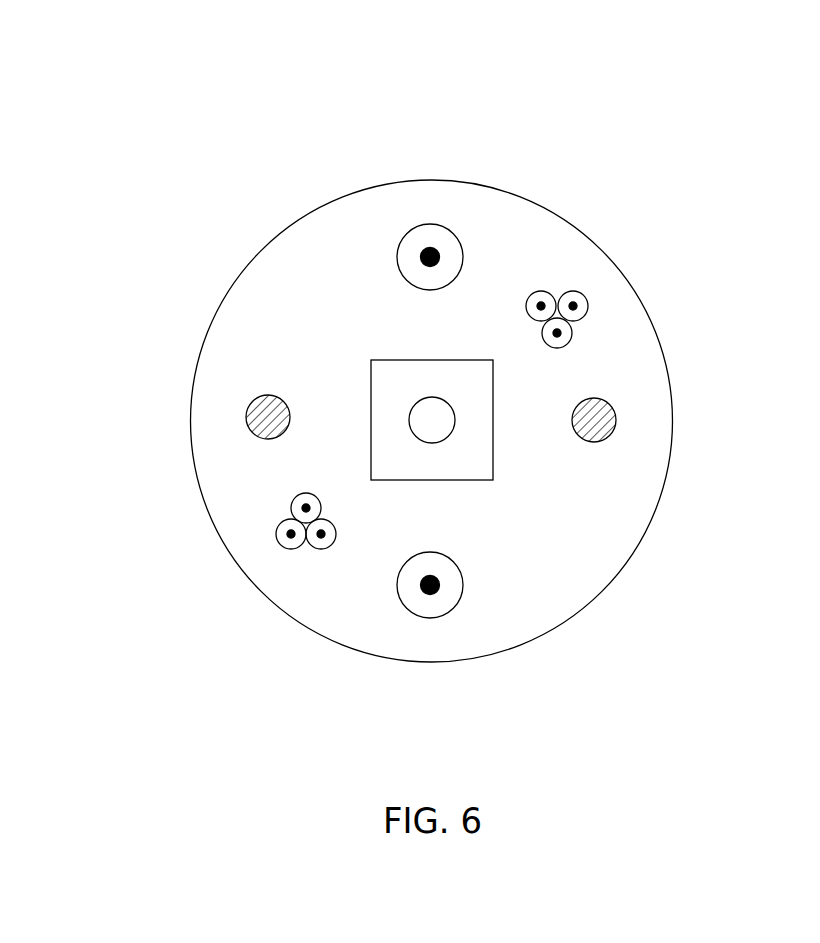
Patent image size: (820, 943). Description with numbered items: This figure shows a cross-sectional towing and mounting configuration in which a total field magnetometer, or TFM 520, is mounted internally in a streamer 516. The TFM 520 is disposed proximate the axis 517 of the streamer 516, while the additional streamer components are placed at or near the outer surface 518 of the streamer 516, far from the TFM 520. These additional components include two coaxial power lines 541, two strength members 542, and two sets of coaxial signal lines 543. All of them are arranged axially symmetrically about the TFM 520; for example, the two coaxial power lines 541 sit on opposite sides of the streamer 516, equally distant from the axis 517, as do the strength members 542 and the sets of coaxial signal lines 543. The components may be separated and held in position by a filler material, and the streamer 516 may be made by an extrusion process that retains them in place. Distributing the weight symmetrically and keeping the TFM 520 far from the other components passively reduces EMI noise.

The streamer 516 is at (192, 195).
The axis 517 is at (437, 393).
The outer surface 518 is at (365, 187).
The TFM 520 is at (470, 375).
The coaxial power lines 541 is at (398, 274).
The strength members 542 is at (246, 417).
The coaxial signal lines 543 is at (597, 292).